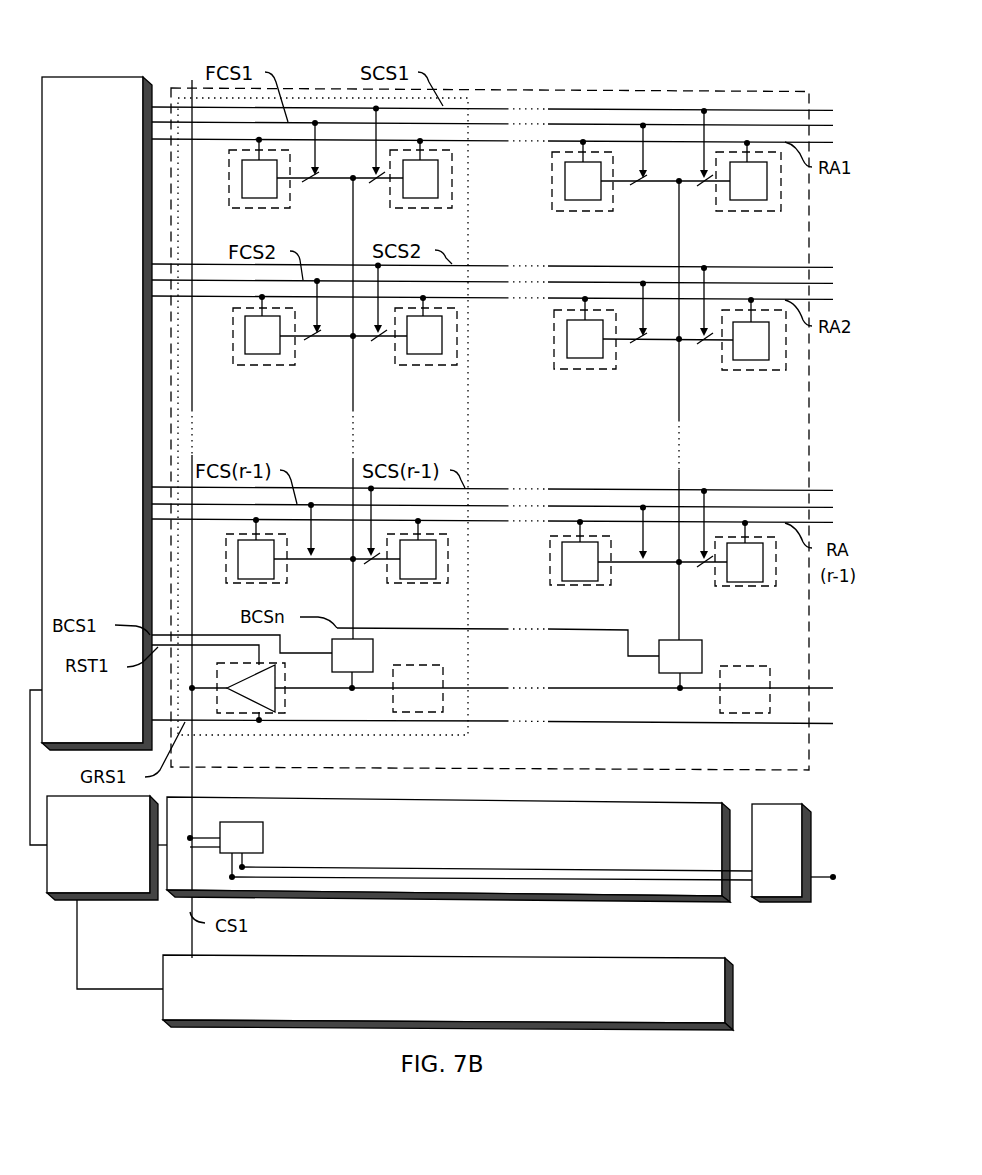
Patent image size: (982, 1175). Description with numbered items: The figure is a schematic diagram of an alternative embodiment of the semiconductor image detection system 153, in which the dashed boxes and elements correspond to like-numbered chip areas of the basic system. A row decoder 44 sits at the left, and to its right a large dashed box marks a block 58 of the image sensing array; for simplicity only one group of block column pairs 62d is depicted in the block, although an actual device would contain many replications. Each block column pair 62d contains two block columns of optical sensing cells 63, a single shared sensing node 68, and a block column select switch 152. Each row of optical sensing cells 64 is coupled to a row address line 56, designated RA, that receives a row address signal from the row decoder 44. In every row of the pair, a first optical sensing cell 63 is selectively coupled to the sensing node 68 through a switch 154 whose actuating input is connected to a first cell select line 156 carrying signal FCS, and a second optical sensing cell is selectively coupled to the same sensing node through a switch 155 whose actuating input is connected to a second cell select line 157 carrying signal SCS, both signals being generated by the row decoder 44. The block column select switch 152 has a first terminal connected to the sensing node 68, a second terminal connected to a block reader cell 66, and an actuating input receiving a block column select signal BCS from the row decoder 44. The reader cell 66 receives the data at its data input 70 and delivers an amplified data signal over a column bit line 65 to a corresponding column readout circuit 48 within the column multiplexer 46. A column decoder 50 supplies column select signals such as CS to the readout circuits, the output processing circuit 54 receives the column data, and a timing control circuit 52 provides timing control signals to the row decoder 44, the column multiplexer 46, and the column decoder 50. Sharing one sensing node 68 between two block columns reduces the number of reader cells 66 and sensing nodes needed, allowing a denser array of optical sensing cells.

The alternative embodiment of the semiconductor image detection system 153 is at (67, 51).
The row decoder 44 is at (78, 275).
The block 58 is at (489, 89).
The first cell select line 156 is at (720, 110).
The second cell select line 157 is at (750, 125).
The optical sensing cell 64 is at (250, 188).
The optical sensing cell 63 is at (257, 208).
The switch 154 is at (307, 184).
The switch 155 is at (372, 186).
The row address line 56 is at (478, 140).
The column bit line 65 is at (192, 398).
The sensing node 68 is at (353, 405).
The block column pair 62d is at (468, 418).
The block column select switch 152 is at (338, 666).
The block reader cell 66 is at (249, 697).
The data input 70 is at (277, 690).
The timing control circuit 52 is at (86, 880).
The column readout circuit 48 is at (232, 847).
The column multiplexer 46 is at (688, 898).
The output processing circuit 54 is at (765, 872).
The column decoder 50 is at (431, 1013).